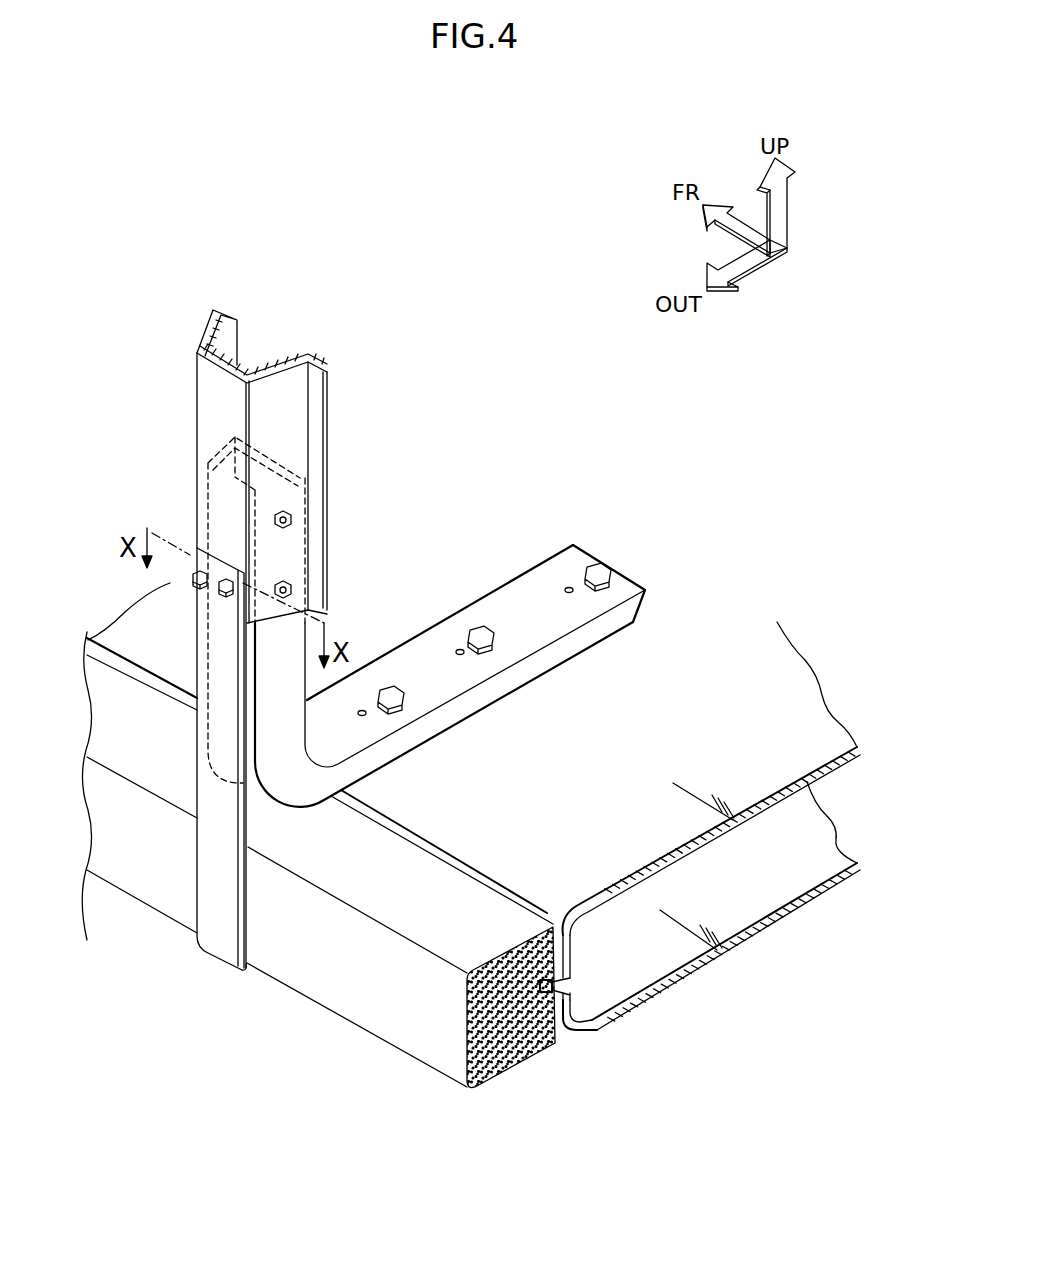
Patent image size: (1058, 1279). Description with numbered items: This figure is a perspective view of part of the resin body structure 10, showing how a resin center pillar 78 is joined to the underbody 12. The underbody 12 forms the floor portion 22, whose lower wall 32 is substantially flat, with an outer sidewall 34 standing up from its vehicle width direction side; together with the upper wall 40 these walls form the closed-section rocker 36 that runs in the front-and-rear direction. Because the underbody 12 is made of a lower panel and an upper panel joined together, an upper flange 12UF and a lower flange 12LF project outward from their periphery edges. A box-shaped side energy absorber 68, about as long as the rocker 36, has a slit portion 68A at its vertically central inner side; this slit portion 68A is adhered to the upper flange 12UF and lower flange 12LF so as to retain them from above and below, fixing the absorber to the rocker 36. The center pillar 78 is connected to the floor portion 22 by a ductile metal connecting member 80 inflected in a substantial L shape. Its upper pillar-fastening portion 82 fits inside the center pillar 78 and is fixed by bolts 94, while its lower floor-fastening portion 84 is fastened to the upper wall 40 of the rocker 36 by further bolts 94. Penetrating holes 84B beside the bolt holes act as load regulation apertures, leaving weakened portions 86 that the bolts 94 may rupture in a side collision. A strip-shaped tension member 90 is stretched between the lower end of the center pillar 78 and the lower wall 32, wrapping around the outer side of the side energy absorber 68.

The resin body structure 10 is at (159, 230).
The underbody 12 is at (650, 976).
The upper flange 12UF is at (551, 921).
The lower flange 12LF is at (554, 996).
The floor portion 22 is at (779, 926).
The lower wall 32 is at (817, 853).
The outer sidewall 34 is at (572, 986).
The rocker 36 is at (680, 985).
The upper wall 40 is at (803, 723).
The side energy absorber 68 is at (318, 873).
The slit portion 68A is at (543, 995).
The center pillar 78 is at (205, 395).
The connecting member 80 is at (297, 818).
The pillar-fastening portion 82 is at (286, 556).
The floor-fastening portion 84 is at (476, 628).
The penetrating hole 84B is at (567, 588).
The weakened portion 86 is at (462, 656).
The tension member 90 is at (207, 865).
The bolt 94 is at (294, 517).